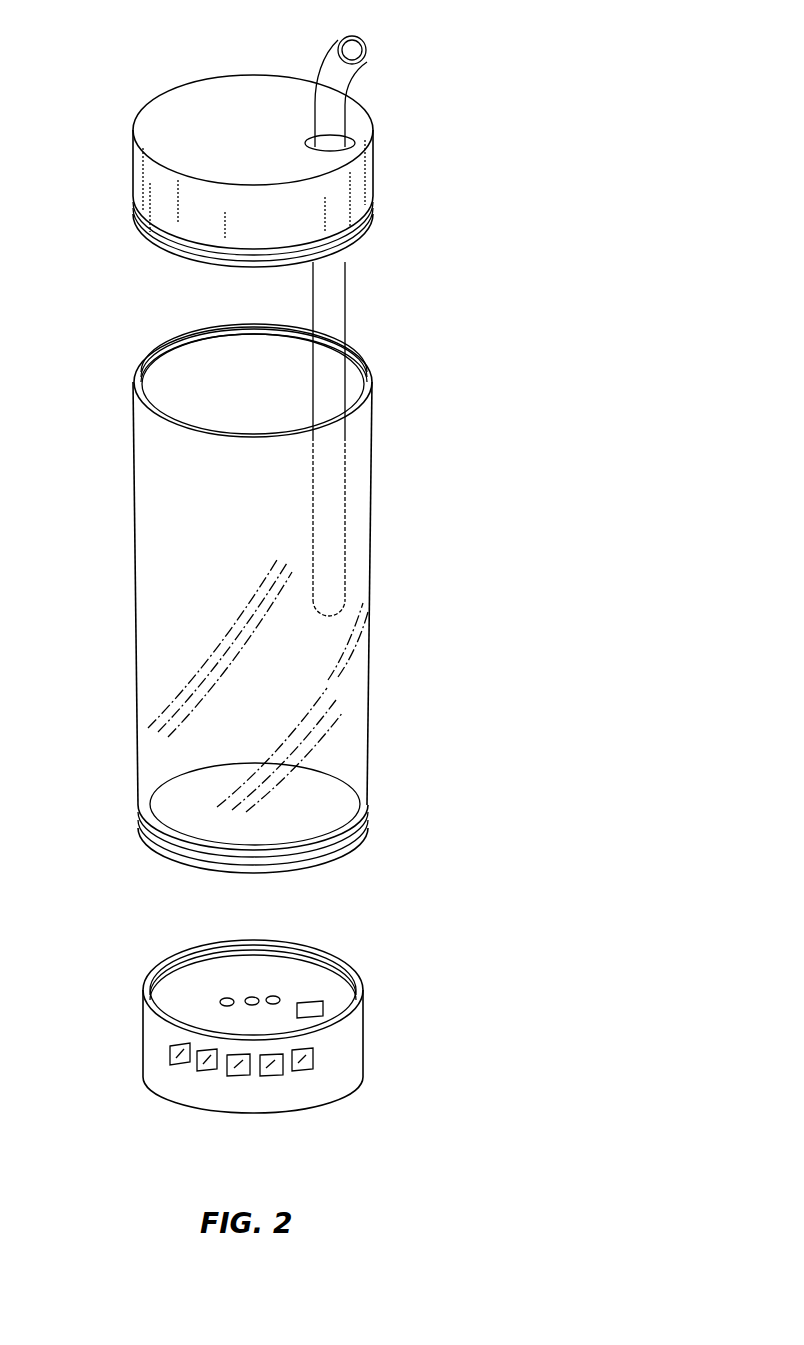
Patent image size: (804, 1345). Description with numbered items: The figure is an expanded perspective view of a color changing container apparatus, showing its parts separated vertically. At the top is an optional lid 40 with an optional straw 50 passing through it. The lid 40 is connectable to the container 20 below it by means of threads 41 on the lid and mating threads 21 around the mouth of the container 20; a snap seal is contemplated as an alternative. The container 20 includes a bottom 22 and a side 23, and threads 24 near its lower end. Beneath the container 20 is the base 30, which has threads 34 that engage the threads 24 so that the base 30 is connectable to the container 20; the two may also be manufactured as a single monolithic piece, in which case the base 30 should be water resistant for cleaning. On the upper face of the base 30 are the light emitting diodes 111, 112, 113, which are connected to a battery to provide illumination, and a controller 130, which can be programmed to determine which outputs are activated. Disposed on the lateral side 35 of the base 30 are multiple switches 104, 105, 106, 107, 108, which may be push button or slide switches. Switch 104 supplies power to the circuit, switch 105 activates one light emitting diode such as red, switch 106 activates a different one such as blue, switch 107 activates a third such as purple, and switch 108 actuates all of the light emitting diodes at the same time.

The container 20 is at (270, 593).
The threads 21 is at (183, 342).
The bottom 22 is at (310, 802).
The side 23 is at (368, 573).
The threads 24 is at (352, 838).
The base 30 is at (253, 1031).
The threads 34 is at (290, 953).
The lateral side 35 is at (340, 1078).
The lid 40 is at (350, 182).
The threads 41 is at (170, 247).
The straw 50 is at (355, 52).
The switch 104 is at (180, 1052).
The switch 105 is at (270, 1065).
The switch 106 is at (207, 1060).
The switch 107 is at (302, 1062).
The switch 108 is at (240, 1065).
The light emitting diode 111 is at (273, 998).
The light emitting diode 112 is at (252, 998).
The light emitting diode 113 is at (227, 1000).
The controller 130 is at (313, 997).